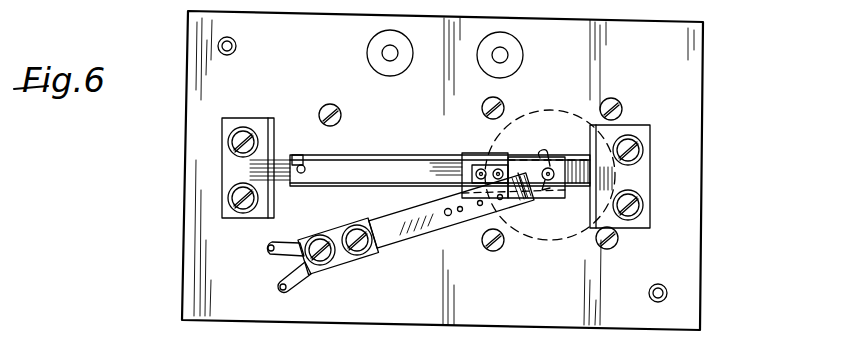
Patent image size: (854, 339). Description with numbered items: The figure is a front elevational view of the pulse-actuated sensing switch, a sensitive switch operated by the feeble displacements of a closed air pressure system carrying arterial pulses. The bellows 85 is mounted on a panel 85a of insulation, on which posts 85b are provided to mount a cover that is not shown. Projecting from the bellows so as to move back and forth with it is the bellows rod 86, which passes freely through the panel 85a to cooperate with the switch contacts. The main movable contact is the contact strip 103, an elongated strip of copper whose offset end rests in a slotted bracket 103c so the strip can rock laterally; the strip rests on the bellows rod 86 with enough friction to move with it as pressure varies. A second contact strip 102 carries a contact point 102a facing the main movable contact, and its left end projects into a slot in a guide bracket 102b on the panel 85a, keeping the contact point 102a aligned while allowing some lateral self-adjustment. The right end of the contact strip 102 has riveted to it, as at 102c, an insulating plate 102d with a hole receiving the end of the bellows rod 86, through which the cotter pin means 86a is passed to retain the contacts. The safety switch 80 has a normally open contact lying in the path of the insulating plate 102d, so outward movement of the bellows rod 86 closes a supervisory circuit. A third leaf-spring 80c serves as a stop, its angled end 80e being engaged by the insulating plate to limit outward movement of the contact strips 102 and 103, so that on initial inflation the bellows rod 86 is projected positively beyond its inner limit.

The safety switch 80 is at (368, 261).
The third leaf-spring 80c is at (400, 242).
The angled end 80e is at (526, 200).
The bellows 85 is at (529, 242).
The panel 85a is at (696, 52).
The posts 85b is at (237, 46).
The bellows rod 86 is at (547, 167).
The cotter pin means 86a is at (553, 199).
The contact strip 102 is at (355, 161).
The contact point 102a is at (301, 165).
The guide bracket 102b is at (247, 118).
The rivet 102c is at (481, 169).
The insulating plate 102d is at (462, 155).
The contact strip 103 is at (378, 187).
The slotted bracket 103c is at (632, 132).